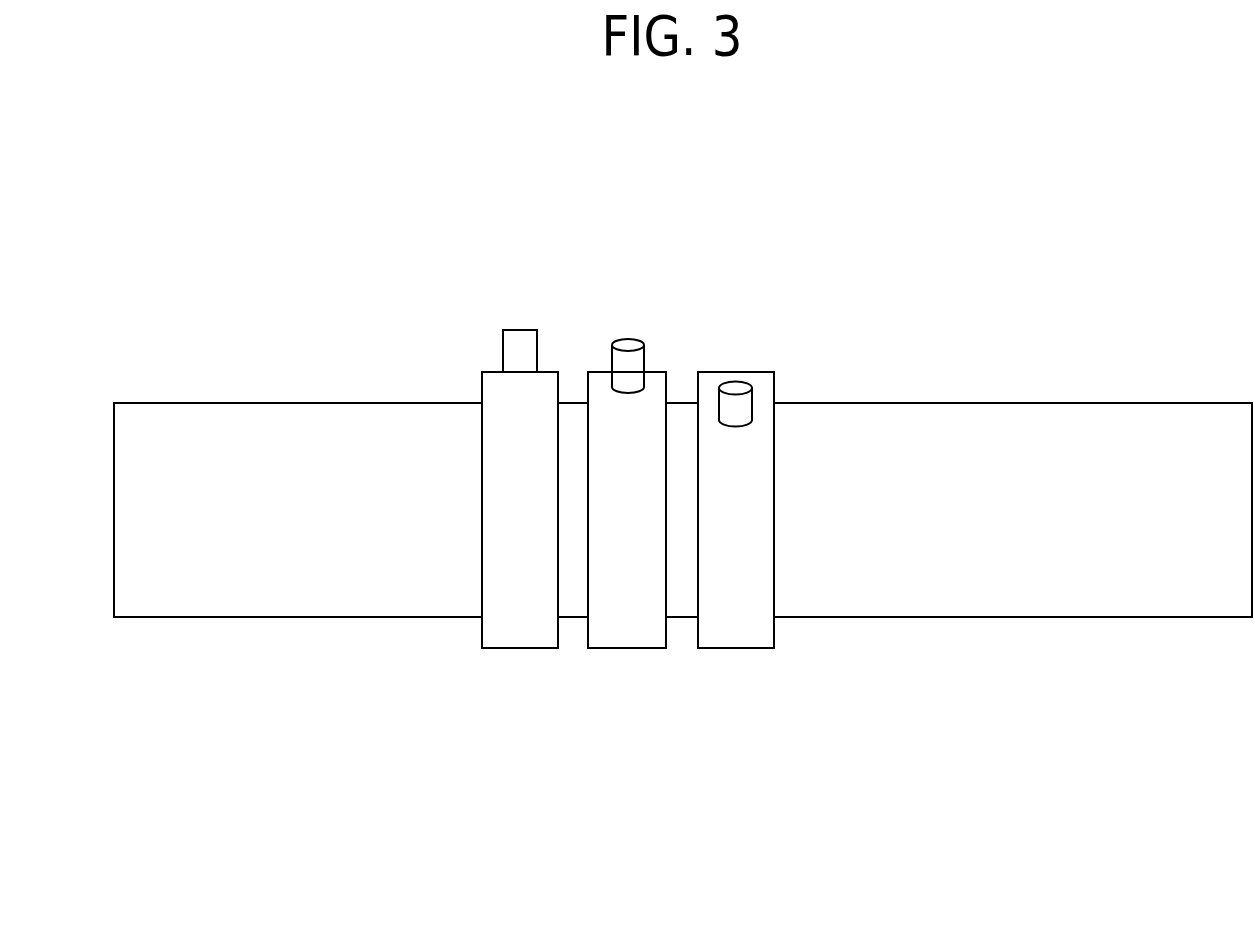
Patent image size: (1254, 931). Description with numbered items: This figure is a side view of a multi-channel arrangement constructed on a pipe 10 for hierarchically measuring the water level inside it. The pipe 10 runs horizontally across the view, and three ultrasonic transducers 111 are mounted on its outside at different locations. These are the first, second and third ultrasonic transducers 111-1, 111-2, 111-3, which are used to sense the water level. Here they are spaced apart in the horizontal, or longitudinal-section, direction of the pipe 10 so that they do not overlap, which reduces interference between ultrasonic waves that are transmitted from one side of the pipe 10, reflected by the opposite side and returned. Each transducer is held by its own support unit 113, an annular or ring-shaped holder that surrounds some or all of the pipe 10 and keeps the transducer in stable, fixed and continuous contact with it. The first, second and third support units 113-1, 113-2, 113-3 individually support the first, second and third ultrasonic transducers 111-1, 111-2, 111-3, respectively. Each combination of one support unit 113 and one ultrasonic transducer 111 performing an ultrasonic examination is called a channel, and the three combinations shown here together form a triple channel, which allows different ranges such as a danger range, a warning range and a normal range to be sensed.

The pipe 10 is at (234, 403).
The ultrasonic transducers 111 is at (783, 276).
The first ultrasonic transducer 111-1 is at (519, 330).
The second ultrasonic transducer 111-2 is at (628, 345).
The third ultrasonic transducer 111-3 is at (735, 388).
The support units 113 is at (783, 708).
The first support unit 113-1 is at (521, 638).
The second support unit 113-2 is at (628, 638).
The third support unit 113-3 is at (737, 638).